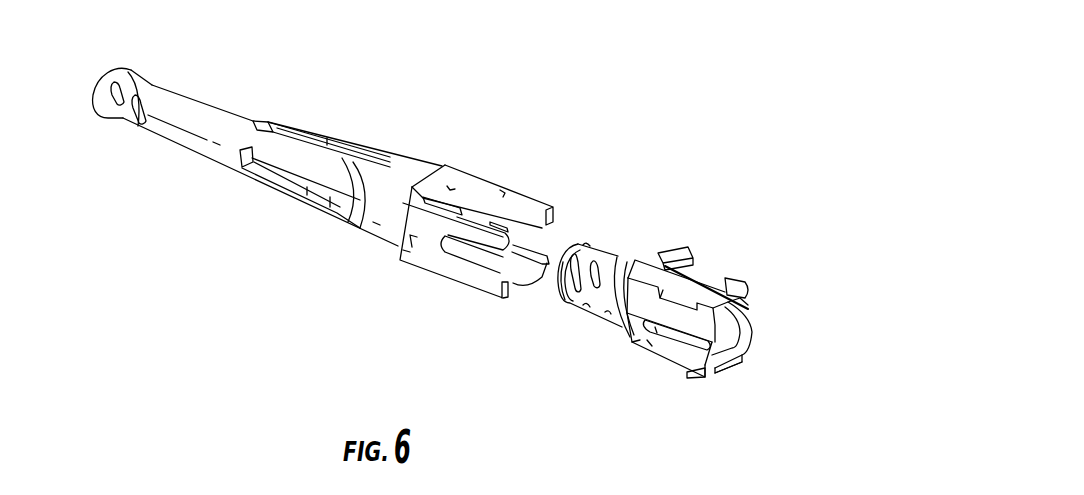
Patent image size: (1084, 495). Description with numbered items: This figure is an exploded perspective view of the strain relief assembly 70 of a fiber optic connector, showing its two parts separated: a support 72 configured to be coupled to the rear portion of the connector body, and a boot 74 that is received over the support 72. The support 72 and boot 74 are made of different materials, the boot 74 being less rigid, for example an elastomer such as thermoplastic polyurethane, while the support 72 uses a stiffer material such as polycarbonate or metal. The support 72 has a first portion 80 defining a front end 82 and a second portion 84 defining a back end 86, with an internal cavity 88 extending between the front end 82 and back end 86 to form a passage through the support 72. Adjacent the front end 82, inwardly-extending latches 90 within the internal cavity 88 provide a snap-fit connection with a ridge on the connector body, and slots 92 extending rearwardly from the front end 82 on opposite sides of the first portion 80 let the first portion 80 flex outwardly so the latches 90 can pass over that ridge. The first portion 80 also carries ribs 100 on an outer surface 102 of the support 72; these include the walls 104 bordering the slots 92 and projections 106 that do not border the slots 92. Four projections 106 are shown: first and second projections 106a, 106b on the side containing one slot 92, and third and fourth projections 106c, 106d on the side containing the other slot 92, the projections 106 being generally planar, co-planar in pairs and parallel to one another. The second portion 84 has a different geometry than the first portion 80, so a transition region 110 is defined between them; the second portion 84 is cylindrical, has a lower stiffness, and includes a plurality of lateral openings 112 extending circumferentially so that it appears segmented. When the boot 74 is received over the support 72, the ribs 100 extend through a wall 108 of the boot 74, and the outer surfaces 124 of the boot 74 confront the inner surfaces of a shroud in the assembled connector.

The strain relief assembly 70 is at (619, 84).
The support 72 is at (822, 214).
The boot 74 is at (581, 128).
The first portion 80 is at (694, 280).
The front end 82 is at (747, 297).
The second portion 84 is at (617, 258).
The back end 86 is at (585, 243).
The internal cavity 88 is at (727, 330).
The latches 90 is at (737, 363).
The slots 92 is at (755, 315).
The rib 100 is at (647, 340).
The outer surface 102 is at (707, 297).
The walls 104 is at (649, 343).
The projections 106 is at (636, 341).
The first projection 106a is at (625, 332).
The second projection 106b is at (703, 380).
The third projection 106c is at (688, 250).
The fourth projection 106d is at (747, 350).
The wall 108 is at (553, 206).
The transition region 110 is at (650, 268).
The lateral openings 112 is at (568, 280).
The outer surfaces 124 is at (503, 192).